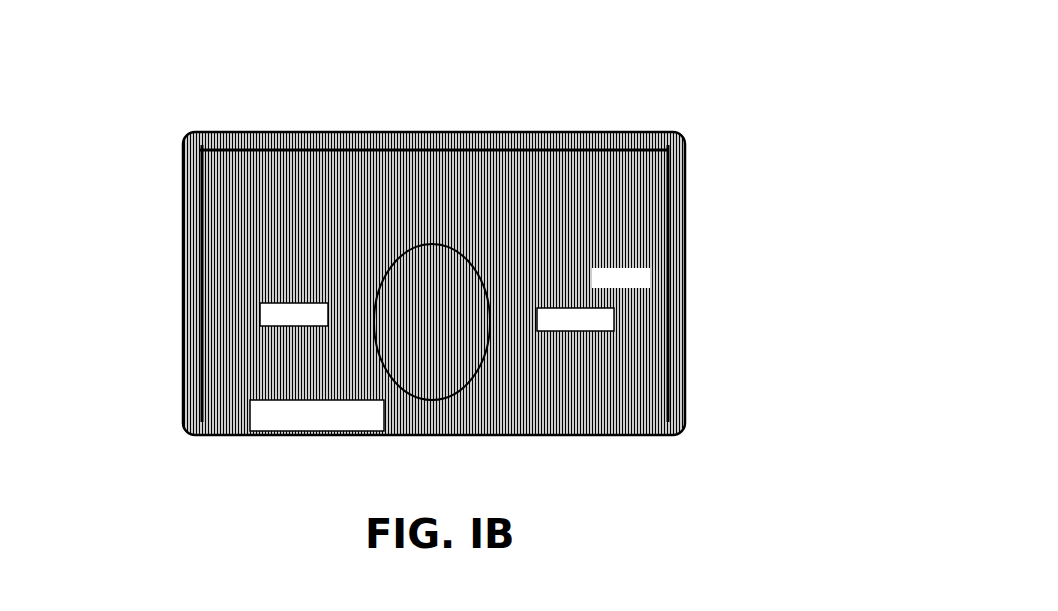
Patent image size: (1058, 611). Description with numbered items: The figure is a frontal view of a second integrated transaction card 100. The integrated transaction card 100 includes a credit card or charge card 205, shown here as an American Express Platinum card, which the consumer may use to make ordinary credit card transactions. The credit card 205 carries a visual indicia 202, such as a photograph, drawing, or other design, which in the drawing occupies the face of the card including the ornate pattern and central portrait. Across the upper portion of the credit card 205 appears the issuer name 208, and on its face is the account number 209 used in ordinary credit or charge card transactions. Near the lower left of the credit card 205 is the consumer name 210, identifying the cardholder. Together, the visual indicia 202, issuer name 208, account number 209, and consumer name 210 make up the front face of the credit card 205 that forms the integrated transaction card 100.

The integrated transaction card 100 is at (700, 112).
The visual indicia 202 is at (190, 188).
The issuer name 208 is at (440, 133).
The credit card or charge card 205 is at (683, 290).
The account number 209 is at (245, 297).
The consumer name 210 is at (267, 436).